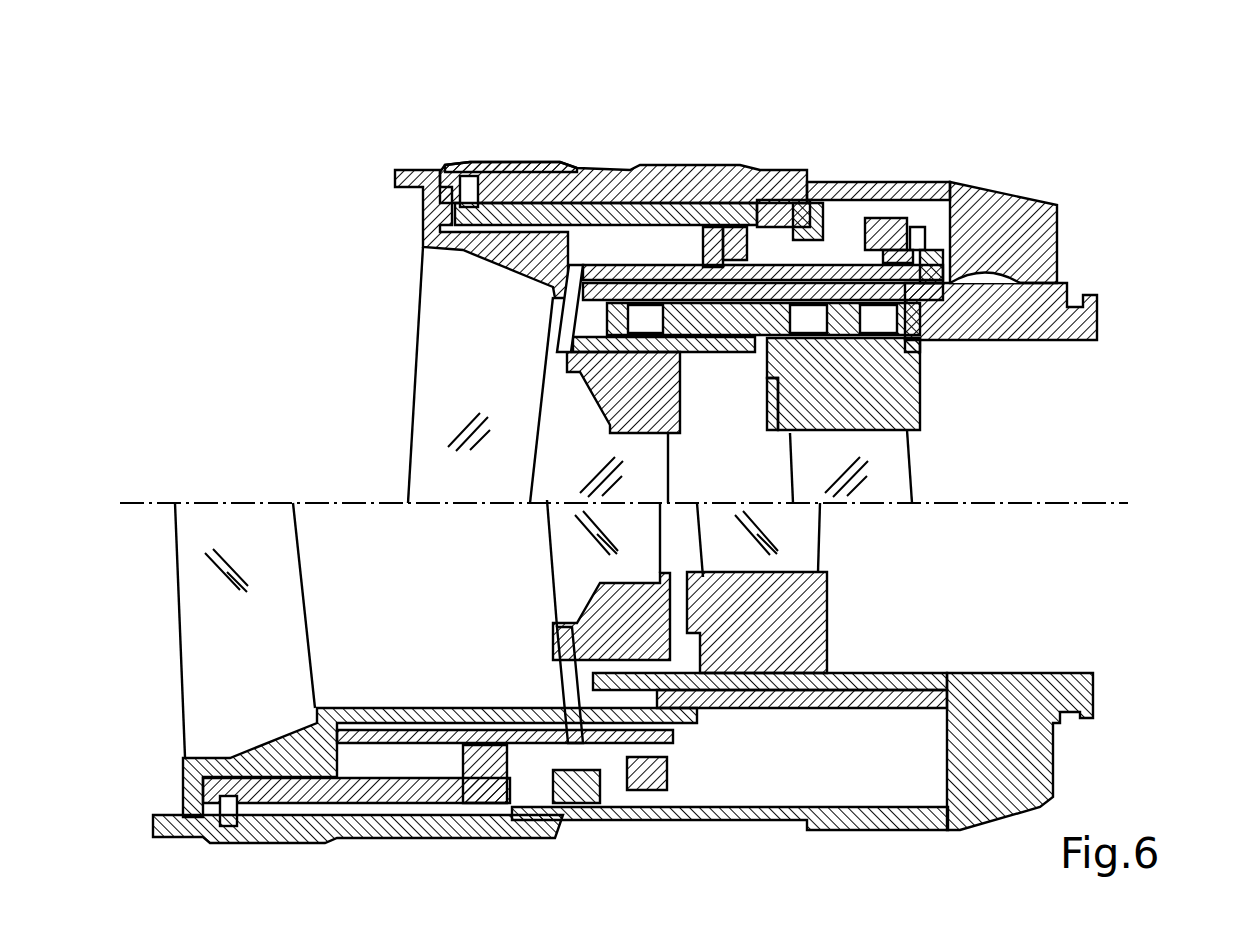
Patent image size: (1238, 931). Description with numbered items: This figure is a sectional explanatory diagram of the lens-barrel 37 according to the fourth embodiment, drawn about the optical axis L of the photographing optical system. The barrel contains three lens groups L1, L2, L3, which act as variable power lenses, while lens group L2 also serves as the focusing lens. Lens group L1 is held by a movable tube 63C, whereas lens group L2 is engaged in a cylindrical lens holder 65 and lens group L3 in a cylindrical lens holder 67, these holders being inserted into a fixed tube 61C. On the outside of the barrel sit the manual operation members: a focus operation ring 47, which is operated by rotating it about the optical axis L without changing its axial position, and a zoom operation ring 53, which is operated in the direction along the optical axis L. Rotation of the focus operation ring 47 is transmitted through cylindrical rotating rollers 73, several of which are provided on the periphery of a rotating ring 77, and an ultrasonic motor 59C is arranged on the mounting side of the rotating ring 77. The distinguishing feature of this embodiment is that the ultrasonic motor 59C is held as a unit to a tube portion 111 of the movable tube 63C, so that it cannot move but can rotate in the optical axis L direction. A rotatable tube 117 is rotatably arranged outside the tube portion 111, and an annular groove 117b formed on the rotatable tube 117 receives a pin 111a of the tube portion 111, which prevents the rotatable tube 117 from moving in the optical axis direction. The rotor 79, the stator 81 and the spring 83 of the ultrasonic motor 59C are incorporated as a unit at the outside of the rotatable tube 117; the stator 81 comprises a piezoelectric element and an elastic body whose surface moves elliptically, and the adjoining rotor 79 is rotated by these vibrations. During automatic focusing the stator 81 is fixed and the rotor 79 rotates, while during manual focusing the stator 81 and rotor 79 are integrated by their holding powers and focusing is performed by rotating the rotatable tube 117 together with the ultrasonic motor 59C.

The lens-barrel 37 is at (1152, 95).
The focus operation ring 47 is at (500, 165).
The zoom operation ring 53 is at (706, 165).
The ultrasonic motor 59C is at (935, 100).
The rear fixed member 61C is at (1035, 208).
The movable tube 63C is at (410, 165).
The lens holder 65 is at (566, 354).
The lens holder 67 is at (920, 420).
The rotating roller 73 is at (822, 200).
The rotating ring 77 is at (760, 185).
The rotor 79 is at (851, 183).
The stator 81 is at (892, 185).
The spring 83 is at (912, 185).
The tube portion 111 is at (740, 340).
The pin 111a is at (920, 395).
The rotatable tube 117 is at (1057, 285).
The annular groove 117b is at (920, 360).
The lens group L1 is at (428, 470).
The lens group L2 is at (655, 478).
The lens group L3 is at (898, 480).
The optical axis L is at (635, 504).